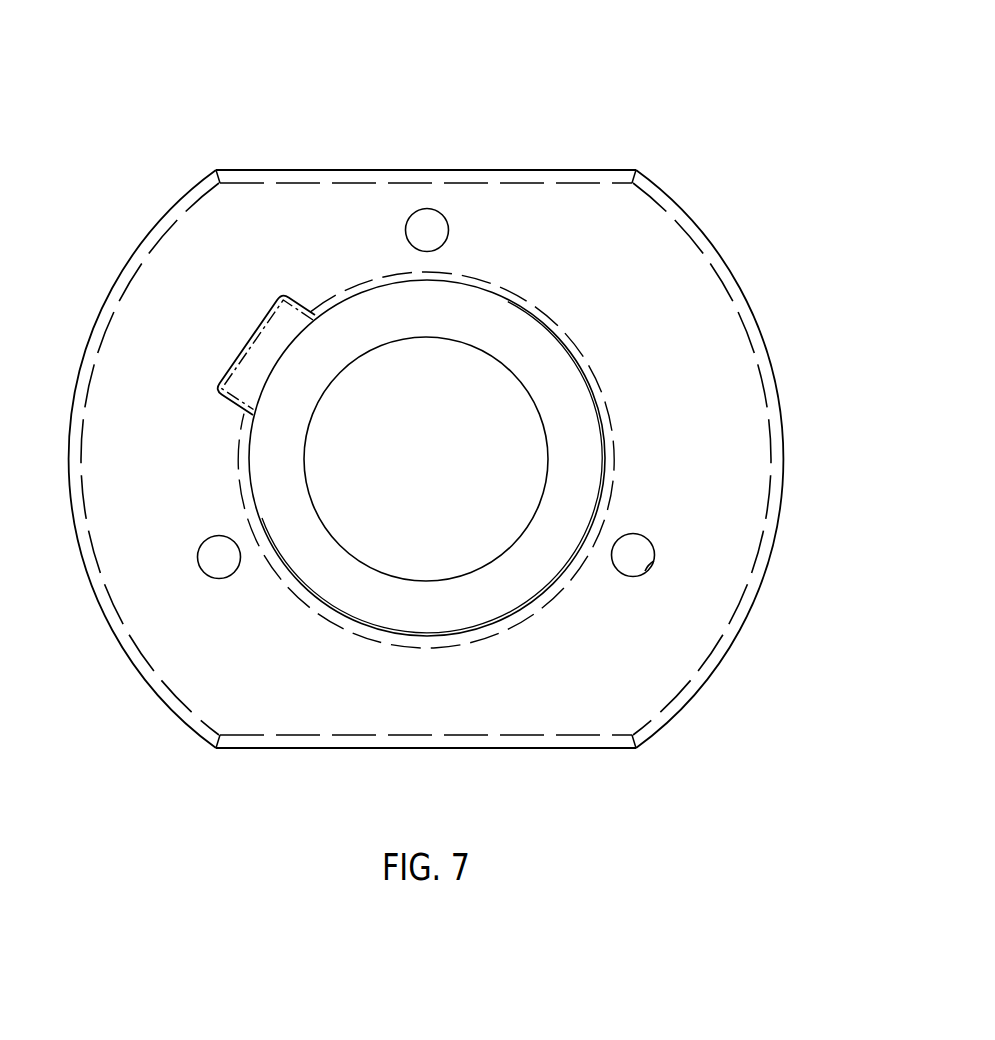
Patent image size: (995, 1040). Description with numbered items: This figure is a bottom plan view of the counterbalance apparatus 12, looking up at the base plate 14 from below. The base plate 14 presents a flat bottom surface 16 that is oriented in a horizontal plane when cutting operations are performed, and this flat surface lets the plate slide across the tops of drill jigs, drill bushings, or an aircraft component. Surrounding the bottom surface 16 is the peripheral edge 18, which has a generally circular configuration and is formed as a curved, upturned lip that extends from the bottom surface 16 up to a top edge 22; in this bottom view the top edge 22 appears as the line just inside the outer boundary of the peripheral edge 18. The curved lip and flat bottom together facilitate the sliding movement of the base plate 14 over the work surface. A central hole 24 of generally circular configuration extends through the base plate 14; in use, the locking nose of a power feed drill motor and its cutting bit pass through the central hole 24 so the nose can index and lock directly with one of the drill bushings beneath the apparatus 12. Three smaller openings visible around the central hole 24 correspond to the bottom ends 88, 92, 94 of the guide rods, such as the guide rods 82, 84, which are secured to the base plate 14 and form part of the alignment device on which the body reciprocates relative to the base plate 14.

The counterbalance apparatus 12 is at (426, 408).
The base plate 14 is at (444, 459).
The flat bottom surface 16 is at (637, 690).
The peripheral edge 18 is at (765, 338).
The top edge 22 is at (733, 287).
The central hole 24 is at (392, 556).
The guide rod 82 is at (197, 552).
The guide rod 84 is at (650, 572).
The bottom end of guide rod 88 is at (266, 388).
The bottom end of guide rod 92 is at (638, 552).
The bottom end of guide rod 94 is at (430, 225).